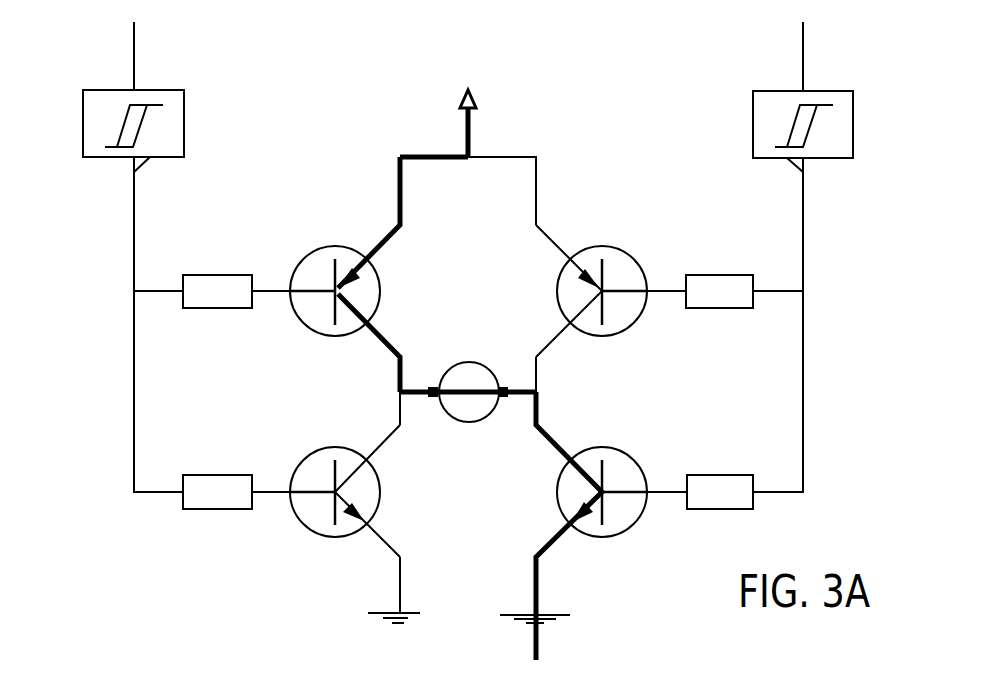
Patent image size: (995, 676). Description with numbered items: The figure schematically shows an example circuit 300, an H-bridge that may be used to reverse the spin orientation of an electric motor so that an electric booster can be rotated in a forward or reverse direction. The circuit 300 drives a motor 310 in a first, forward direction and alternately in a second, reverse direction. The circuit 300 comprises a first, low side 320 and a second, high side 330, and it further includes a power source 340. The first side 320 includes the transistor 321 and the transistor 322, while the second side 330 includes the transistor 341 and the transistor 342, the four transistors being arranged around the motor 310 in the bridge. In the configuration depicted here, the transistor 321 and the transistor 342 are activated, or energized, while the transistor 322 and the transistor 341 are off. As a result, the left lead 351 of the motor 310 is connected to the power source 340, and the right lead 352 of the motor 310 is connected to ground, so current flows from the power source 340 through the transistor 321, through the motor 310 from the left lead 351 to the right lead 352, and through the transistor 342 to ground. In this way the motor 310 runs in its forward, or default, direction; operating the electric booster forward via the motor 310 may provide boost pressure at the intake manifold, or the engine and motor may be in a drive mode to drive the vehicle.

The circuit 300 is at (287, 58).
The motor 310 is at (486, 341).
The first (LO) side 320 is at (68, 57).
The transistor 321 is at (326, 247).
The transistor 322 is at (324, 447).
The second (HI) side 330 is at (861, 57).
The power source 340 is at (472, 97).
The transistor 341 is at (620, 248).
The transistor 342 is at (628, 452).
The left lead 351 is at (433, 397).
The right lead 352 is at (504, 397).